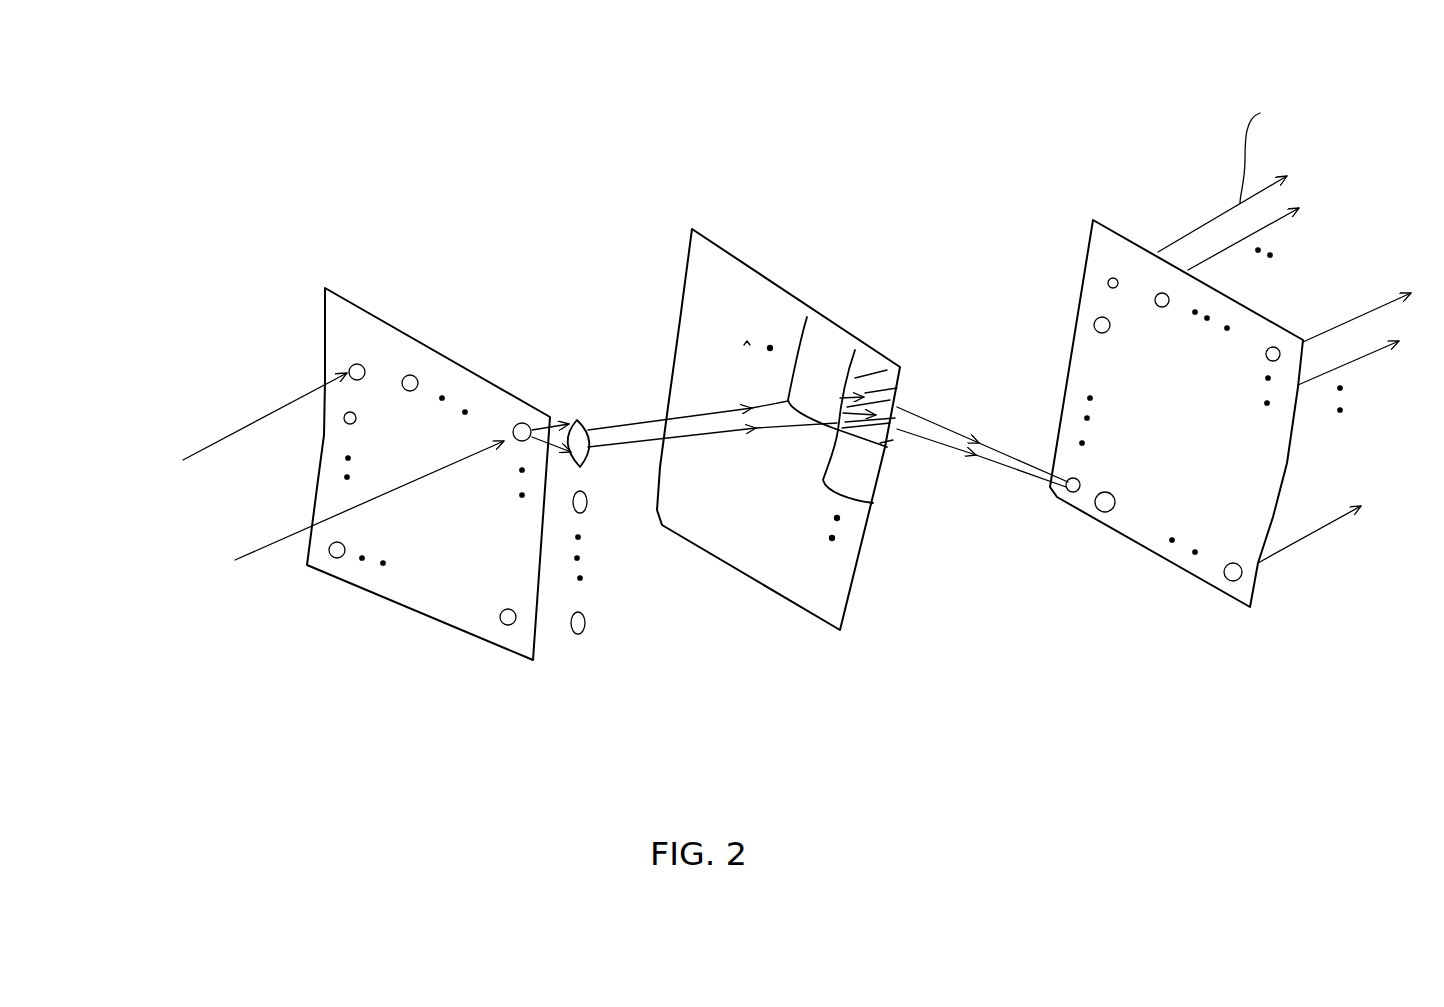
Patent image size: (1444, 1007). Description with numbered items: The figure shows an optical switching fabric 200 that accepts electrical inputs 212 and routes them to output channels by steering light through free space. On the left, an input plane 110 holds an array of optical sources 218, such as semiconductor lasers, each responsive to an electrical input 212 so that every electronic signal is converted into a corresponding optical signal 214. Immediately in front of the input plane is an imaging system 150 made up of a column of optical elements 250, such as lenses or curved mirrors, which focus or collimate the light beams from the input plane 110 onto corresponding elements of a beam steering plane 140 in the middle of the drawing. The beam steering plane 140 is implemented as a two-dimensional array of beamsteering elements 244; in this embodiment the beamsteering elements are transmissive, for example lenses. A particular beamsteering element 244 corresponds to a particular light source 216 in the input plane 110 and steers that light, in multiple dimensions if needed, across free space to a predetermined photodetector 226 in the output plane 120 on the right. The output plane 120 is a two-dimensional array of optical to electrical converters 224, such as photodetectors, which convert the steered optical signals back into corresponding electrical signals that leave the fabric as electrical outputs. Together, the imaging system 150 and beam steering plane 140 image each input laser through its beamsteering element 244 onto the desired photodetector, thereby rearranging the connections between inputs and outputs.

The optical switching fabric 200 is at (279, 109).
The input plane 110 is at (370, 308).
The electrical inputs 212 is at (266, 596).
The optical source 218 is at (414, 373).
The light source 216 is at (513, 443).
The optical signal 214 is at (553, 413).
The optical element 250 is at (587, 622).
The imaging system 150 is at (584, 649).
The beam steering plane 140 is at (776, 275).
The beamsteering element 244 is at (893, 441).
The output plane 120 is at (1093, 220).
The optical to electrical converters 224 is at (1094, 325).
The photodetector 226 is at (1047, 490).